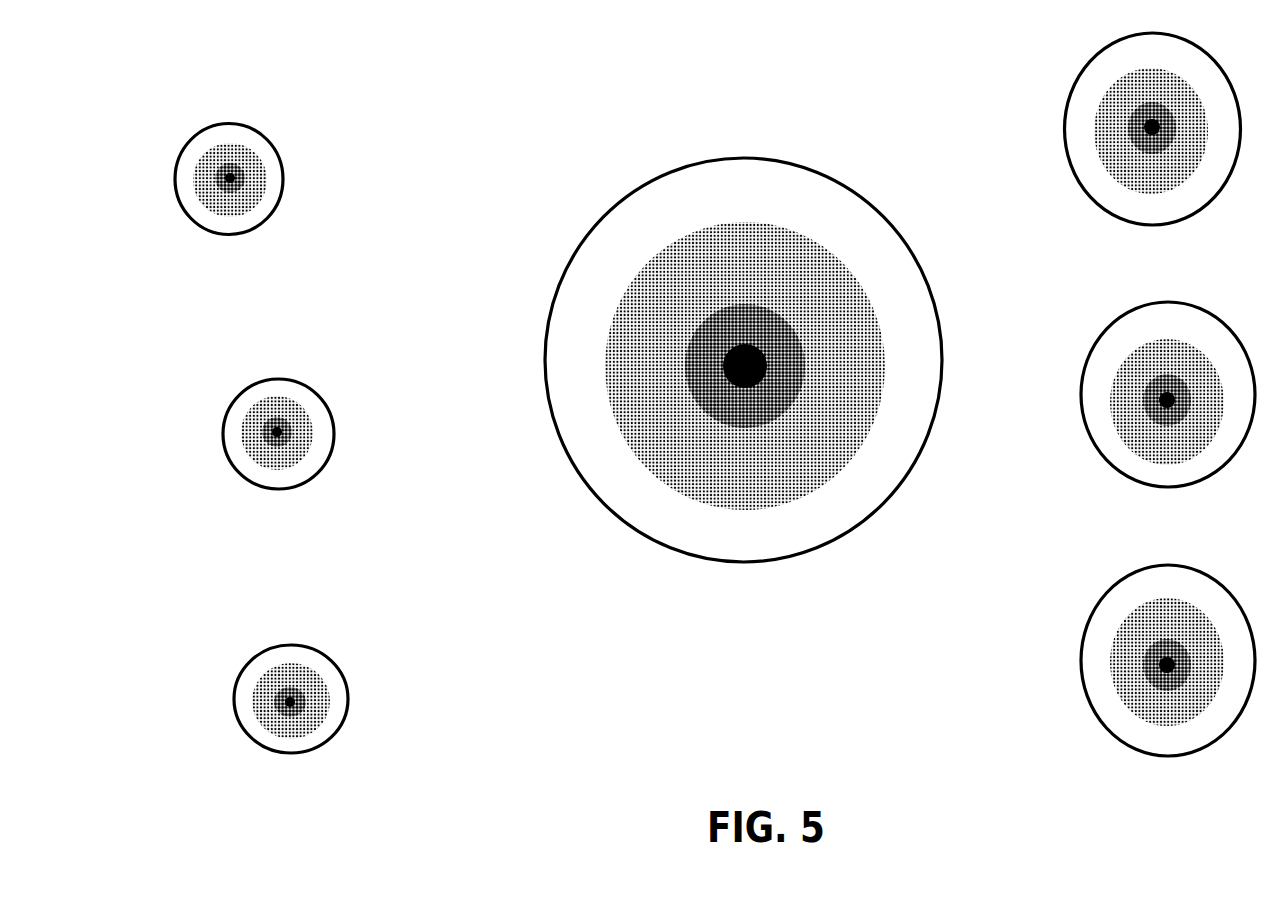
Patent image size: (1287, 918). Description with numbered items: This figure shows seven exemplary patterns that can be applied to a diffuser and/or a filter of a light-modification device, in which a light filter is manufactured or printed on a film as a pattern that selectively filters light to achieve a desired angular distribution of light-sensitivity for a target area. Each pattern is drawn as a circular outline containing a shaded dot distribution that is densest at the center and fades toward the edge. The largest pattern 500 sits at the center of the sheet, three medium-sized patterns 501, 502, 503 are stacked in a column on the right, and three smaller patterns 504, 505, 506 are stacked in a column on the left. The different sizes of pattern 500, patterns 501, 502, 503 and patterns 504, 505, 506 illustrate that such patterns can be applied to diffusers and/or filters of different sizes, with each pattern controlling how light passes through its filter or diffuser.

The exemplary pattern 500 is at (743, 384).
The exemplary pattern 501 is at (1153, 150).
The exemplary pattern 502 is at (1168, 416).
The exemplary pattern 503 is at (1168, 685).
The exemplary pattern 504 is at (229, 201).
The exemplary pattern 505 is at (278, 454).
The exemplary pattern 506 is at (291, 722).